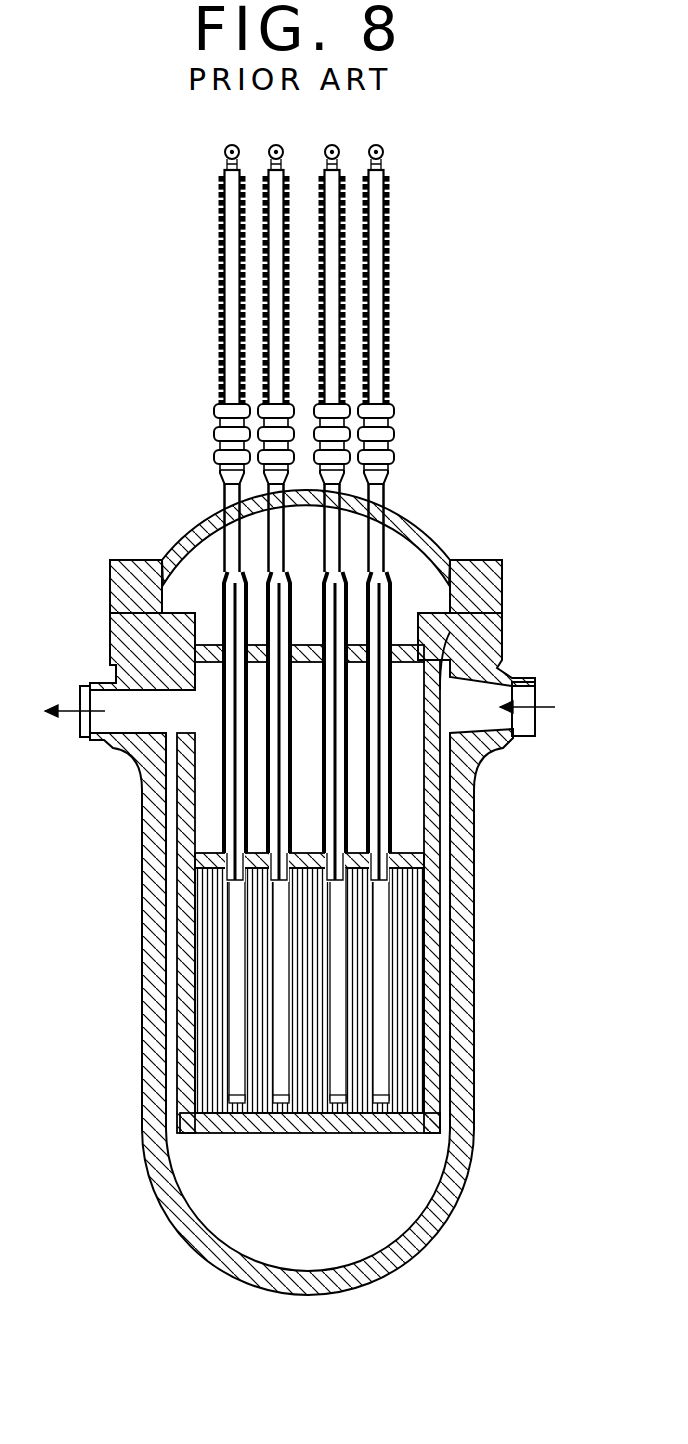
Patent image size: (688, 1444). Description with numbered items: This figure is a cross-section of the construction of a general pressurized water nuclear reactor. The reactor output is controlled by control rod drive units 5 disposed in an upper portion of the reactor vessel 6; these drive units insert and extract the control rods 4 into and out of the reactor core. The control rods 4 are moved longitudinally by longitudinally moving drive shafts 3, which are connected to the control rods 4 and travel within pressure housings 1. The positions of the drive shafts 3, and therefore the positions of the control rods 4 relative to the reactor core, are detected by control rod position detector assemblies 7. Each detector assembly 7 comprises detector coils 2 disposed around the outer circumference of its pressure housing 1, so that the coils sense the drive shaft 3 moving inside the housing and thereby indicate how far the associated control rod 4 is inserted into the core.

The pressure housing 1 is at (395, 158).
The detector coil 2 is at (385, 258).
The drive shaft 3 is at (380, 583).
The control rod 4 is at (383, 970).
The control rod drive unit 5 is at (386, 410).
The reactor vessel 6 is at (505, 636).
The control rod position detector assembly 7 is at (298, 353).